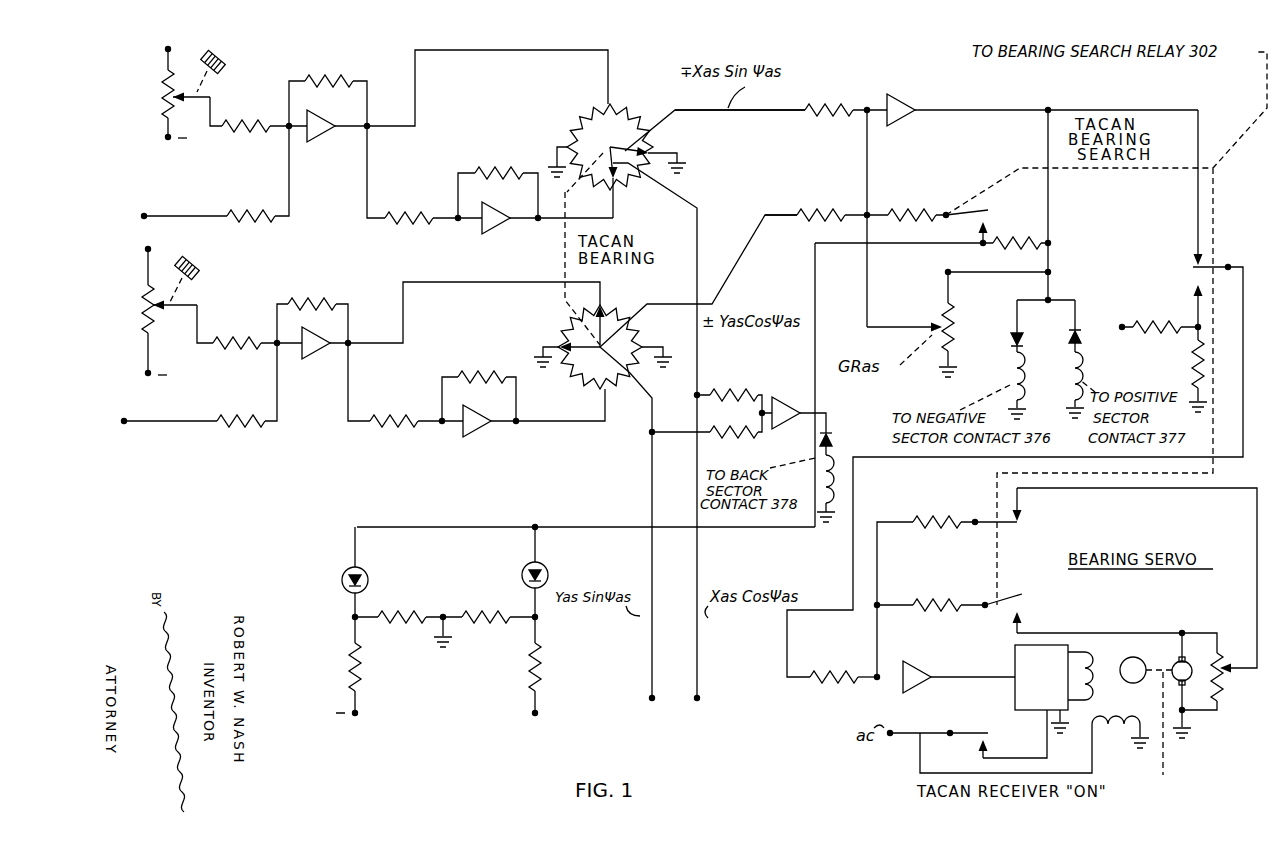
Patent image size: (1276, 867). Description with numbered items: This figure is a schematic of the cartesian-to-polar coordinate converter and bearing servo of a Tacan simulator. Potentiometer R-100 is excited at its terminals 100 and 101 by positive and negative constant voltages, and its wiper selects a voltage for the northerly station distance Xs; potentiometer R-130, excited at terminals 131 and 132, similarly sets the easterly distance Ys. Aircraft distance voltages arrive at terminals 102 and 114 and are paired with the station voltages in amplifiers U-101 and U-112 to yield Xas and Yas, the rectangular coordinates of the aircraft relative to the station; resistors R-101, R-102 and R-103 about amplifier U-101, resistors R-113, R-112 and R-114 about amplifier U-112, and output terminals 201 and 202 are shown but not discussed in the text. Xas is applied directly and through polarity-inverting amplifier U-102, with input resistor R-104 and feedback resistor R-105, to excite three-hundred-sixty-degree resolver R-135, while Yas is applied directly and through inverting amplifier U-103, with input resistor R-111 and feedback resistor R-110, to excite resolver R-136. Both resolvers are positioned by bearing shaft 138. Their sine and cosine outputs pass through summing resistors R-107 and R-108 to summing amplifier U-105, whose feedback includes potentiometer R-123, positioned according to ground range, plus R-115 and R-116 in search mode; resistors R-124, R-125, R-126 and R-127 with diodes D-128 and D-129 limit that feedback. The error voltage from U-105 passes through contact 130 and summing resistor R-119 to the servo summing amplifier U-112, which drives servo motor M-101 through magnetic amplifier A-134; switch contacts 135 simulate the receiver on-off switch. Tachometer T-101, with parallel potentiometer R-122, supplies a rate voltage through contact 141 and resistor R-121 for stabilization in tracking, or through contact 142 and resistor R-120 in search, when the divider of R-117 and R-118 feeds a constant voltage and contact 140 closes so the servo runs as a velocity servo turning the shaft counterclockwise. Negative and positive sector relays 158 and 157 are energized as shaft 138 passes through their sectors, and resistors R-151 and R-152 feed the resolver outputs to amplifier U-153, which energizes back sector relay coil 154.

The terminal 100 is at (167, 43).
The terminal 101 is at (166, 139).
The terminal 102 is at (136, 216).
The potentiometer R-100 is at (162, 102).
The northerly distance Xs is at (230, 57).
The resistor R-101 is at (278, 130).
The amplifier U-101 is at (320, 143).
The feedback resistor R-103 is at (354, 76).
The Xas voltage Xas is at (370, 128).
The resistor R-102 is at (280, 208).
The input resistor R-104 is at (436, 204).
The polarity-inverting amplifier U-102 is at (496, 234).
The feedback resistor R-105 is at (526, 158).
The 360 degree resolver R-135 is at (582, 128).
The output shaft 138 is at (852, 477).
The terminal 131 is at (142, 249).
The terminal 132 is at (142, 372).
The potentiometer R-130 is at (142, 319).
The easterly distance Ys is at (198, 262).
The resistor R-113 is at (264, 328).
The amplifier U-112 is at (318, 359).
The feedback resistor R-112 is at (338, 300).
The Yas voltage Yas is at (350, 342).
The terminal 114 is at (124, 419).
The resistor R-114 is at (214, 421).
The input resistor R-111 is at (366, 421).
The polarity-inverting amplifier U-103 is at (486, 437).
The feedback resistor R-110 is at (506, 360).
The 360 degree resolver R-136 is at (556, 341).
The summing resistor R-151 is at (752, 390).
The summing resistor R-152 is at (705, 423).
The amplifier U-153 is at (788, 406).
The back sector relay coil 154 is at (832, 460).
The summing resistor R-107 is at (850, 94).
The summing amplifier U-105 is at (937, 104).
The summing resistor R-108 is at (842, 200).
The resistor R-115 is at (934, 200).
The relay contact 140 is at (976, 228).
The resistor R-116 is at (1038, 240).
The potentiometer R-123 is at (934, 324).
The negative sector relay 158 is at (1014, 330).
The positive sector relay 157 is at (1076, 326).
The relay contact 130 is at (1019, 393).
The resistor R-117 is at (1180, 320).
The resistor R-118 is at (1187, 382).
The summing resistor R-119 is at (854, 668).
The summing resistor R-121 is at (960, 514).
The relay contact 141 is at (1020, 526).
The resistor R-120 is at (962, 598).
The relay contact 142 is at (1026, 614).
The tachometer potentiometer R-122 is at (1222, 646).
The tachometer T-101 is at (1192, 634).
The two phase A.C. servo motor M-101 is at (1152, 660).
The magnetic amplifier 134 is at (1054, 689).
The switch contacts 135 is at (976, 727).
The diode D-128 is at (332, 572).
The diode D-129 is at (521, 574).
The resistor R-125 is at (426, 610).
The resistor R-124 is at (510, 610).
The resistor R-126 is at (352, 646).
The resistor R-127 is at (542, 673).
The Yas sin output terminal 201 is at (656, 694).
The Xas cos output terminal 202 is at (701, 694).